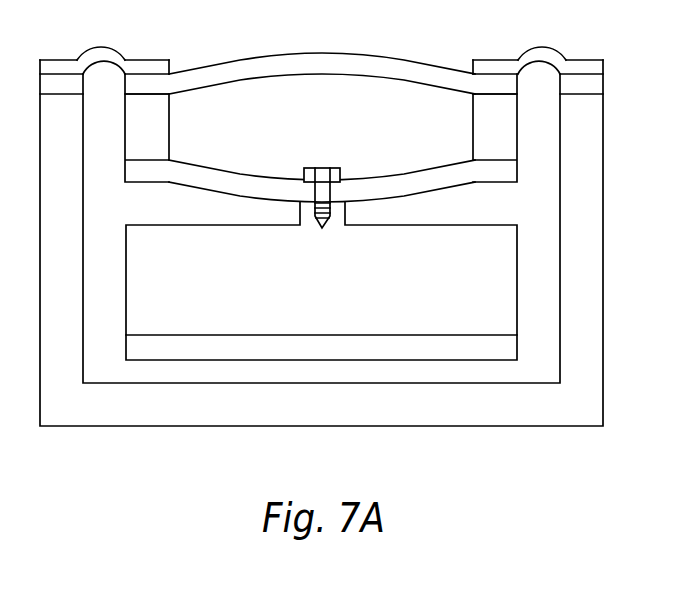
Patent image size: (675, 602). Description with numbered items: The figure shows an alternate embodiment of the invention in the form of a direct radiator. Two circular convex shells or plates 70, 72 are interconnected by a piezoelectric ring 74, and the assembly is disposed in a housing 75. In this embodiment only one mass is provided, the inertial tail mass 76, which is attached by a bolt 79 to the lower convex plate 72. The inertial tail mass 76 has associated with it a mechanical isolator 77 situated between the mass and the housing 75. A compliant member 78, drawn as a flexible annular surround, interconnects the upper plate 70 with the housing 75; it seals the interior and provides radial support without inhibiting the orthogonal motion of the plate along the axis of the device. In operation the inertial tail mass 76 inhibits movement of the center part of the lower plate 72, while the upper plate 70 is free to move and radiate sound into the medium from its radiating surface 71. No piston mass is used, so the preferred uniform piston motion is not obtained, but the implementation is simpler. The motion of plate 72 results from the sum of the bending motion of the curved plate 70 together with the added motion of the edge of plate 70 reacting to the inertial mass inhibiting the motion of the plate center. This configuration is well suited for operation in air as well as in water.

The convex plate 70 is at (322, 51).
The radiating surface 71 is at (374, 55).
The convex plate 72 is at (280, 178).
The piezoelectric ring 74 is at (162, 125).
The housing 75 is at (432, 426).
The inertial tail mass 76 is at (331, 292).
The mechanical isolator 77 is at (252, 359).
The compliant member 78 is at (118, 51).
The bolt 79 is at (323, 168).